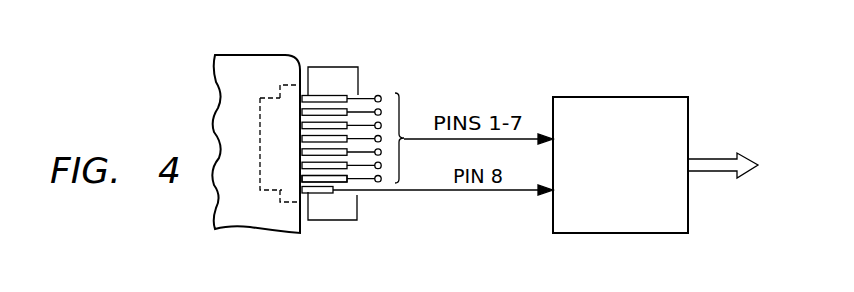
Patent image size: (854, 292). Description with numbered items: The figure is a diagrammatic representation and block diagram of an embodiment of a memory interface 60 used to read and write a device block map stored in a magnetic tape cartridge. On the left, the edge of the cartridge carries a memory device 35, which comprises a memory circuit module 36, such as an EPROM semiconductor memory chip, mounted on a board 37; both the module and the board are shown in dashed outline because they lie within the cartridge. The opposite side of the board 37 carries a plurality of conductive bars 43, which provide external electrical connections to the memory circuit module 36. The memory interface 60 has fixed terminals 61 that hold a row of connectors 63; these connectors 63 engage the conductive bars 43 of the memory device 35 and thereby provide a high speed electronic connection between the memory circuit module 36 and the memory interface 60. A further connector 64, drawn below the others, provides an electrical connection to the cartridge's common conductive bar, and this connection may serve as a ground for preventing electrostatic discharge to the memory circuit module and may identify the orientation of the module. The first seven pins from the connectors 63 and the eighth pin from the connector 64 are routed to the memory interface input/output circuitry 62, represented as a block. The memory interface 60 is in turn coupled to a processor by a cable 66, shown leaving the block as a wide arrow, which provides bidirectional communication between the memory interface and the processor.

The memory device 35 is at (251, 148).
The memory circuit module 36 is at (270, 96).
The board 37 is at (287, 84).
The conductive bars 43 is at (305, 95).
The memory interface 60 is at (443, 50).
The fixed terminals 61 is at (342, 85).
The memory interface input/output circuitry 62 is at (618, 97).
The connectors 63 is at (338, 182).
The connector 64 is at (317, 193).
The cable 66 is at (712, 172).